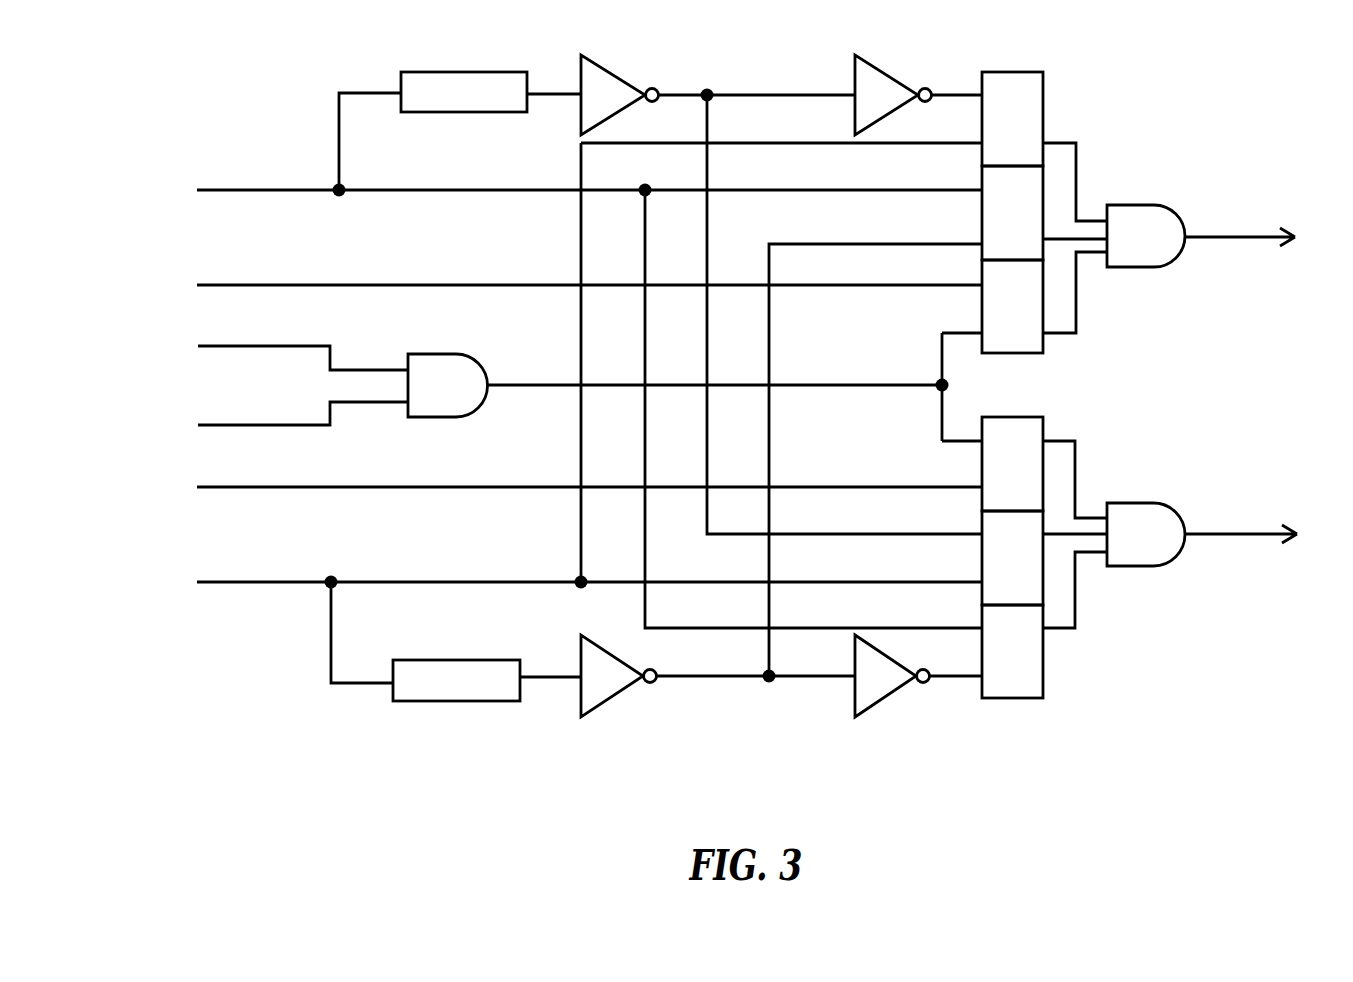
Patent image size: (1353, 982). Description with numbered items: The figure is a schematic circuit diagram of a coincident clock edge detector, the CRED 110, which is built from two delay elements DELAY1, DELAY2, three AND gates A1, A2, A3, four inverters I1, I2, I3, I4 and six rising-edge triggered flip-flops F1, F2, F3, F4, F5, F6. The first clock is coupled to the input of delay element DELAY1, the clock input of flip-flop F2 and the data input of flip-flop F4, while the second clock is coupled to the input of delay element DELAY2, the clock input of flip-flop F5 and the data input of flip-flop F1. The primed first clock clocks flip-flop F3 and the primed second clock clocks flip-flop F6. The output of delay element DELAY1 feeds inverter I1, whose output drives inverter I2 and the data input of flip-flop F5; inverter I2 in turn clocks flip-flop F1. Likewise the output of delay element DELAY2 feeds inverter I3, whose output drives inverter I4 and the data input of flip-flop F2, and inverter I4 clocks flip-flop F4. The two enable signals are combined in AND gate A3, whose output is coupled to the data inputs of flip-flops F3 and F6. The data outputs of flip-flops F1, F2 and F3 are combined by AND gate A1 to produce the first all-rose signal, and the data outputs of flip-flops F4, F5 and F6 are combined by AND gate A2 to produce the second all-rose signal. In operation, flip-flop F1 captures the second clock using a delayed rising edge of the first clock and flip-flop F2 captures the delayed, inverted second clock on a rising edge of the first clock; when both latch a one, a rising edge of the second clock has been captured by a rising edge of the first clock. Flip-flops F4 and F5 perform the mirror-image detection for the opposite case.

The CRED 110 is at (1158, 68).
The delay element DELAY1 is at (464, 92).
The delay element DELAY2 is at (456, 680).
The inverter I1 is at (620, 95).
The inverter I2 is at (893, 95).
The inverter I3 is at (619, 676).
The inverter I4 is at (892, 676).
The AND gate A1 is at (1146, 236).
The AND gate A2 is at (1146, 534).
The AND gate A3 is at (448, 385).
The rising-edge triggered flip-flop F1 is at (1012, 119).
The rising-edge triggered flip-flop F2 is at (1012, 213).
The rising-edge triggered flip-flop F3 is at (1012, 306).
The rising-edge triggered flip-flop F4 is at (1012, 651).
The rising-edge triggered flip-flop F5 is at (1012, 558).
The rising-edge triggered flip-flop F6 is at (1012, 464).